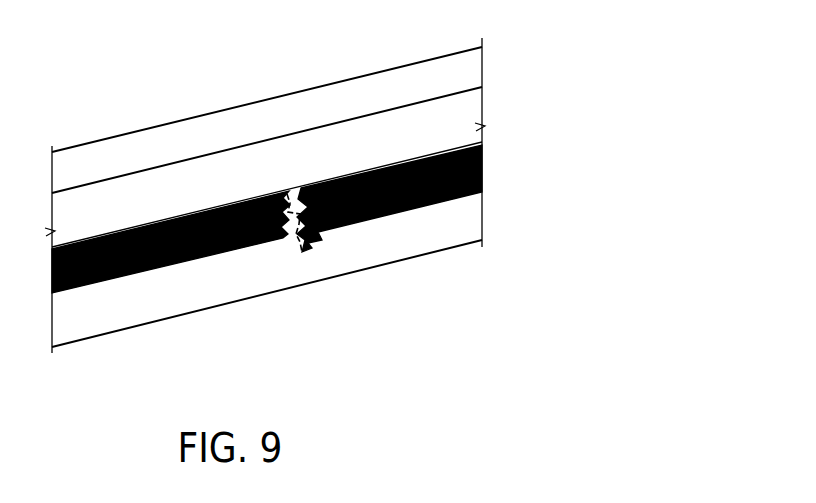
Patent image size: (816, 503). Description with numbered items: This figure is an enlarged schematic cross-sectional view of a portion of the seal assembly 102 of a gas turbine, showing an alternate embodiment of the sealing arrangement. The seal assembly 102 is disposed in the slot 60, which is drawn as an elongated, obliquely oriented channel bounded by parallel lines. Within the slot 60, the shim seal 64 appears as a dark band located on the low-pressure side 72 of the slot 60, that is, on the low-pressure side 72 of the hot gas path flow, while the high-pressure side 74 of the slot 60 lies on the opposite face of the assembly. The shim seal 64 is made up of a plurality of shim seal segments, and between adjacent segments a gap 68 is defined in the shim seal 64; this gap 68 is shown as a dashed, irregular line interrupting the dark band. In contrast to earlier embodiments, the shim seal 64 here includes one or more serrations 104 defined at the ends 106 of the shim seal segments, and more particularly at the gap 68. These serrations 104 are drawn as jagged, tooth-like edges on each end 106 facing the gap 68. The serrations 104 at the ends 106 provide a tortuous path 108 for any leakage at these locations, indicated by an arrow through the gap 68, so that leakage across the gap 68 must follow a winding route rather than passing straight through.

The slot 60 is at (312, 78).
The shim seal 64 is at (422, 205).
The gap 68 is at (299, 273).
The low-pressure side 72 is at (138, 295).
The high-pressure side 74 is at (192, 97).
The seal assembly 102 is at (97, 110).
The serration 104 is at (278, 247).
The end 106 is at (263, 241).
The tortuous path 108 is at (308, 260).